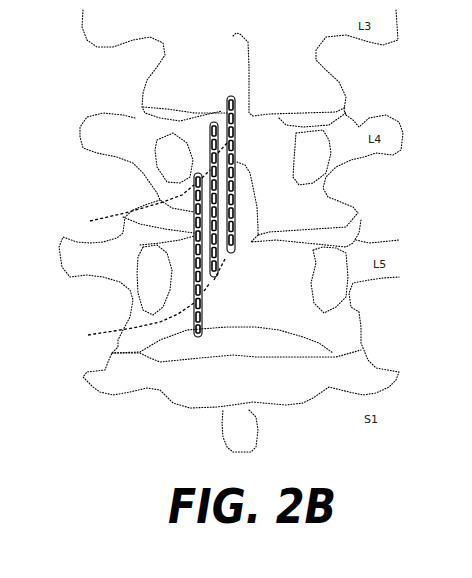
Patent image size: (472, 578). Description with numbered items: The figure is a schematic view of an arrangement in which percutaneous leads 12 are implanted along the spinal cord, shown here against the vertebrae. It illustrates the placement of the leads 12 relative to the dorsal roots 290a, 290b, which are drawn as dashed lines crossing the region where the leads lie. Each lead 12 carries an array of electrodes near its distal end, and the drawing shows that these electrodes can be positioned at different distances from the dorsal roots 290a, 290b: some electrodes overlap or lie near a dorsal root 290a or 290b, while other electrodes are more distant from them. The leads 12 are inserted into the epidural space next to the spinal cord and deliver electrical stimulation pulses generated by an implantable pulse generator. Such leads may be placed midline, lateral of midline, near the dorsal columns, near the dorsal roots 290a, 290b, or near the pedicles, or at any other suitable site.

The stimulation lead 12 is at (226, 112).
The dorsal root 290a is at (98, 210).
The dorsal root 290b is at (98, 327).